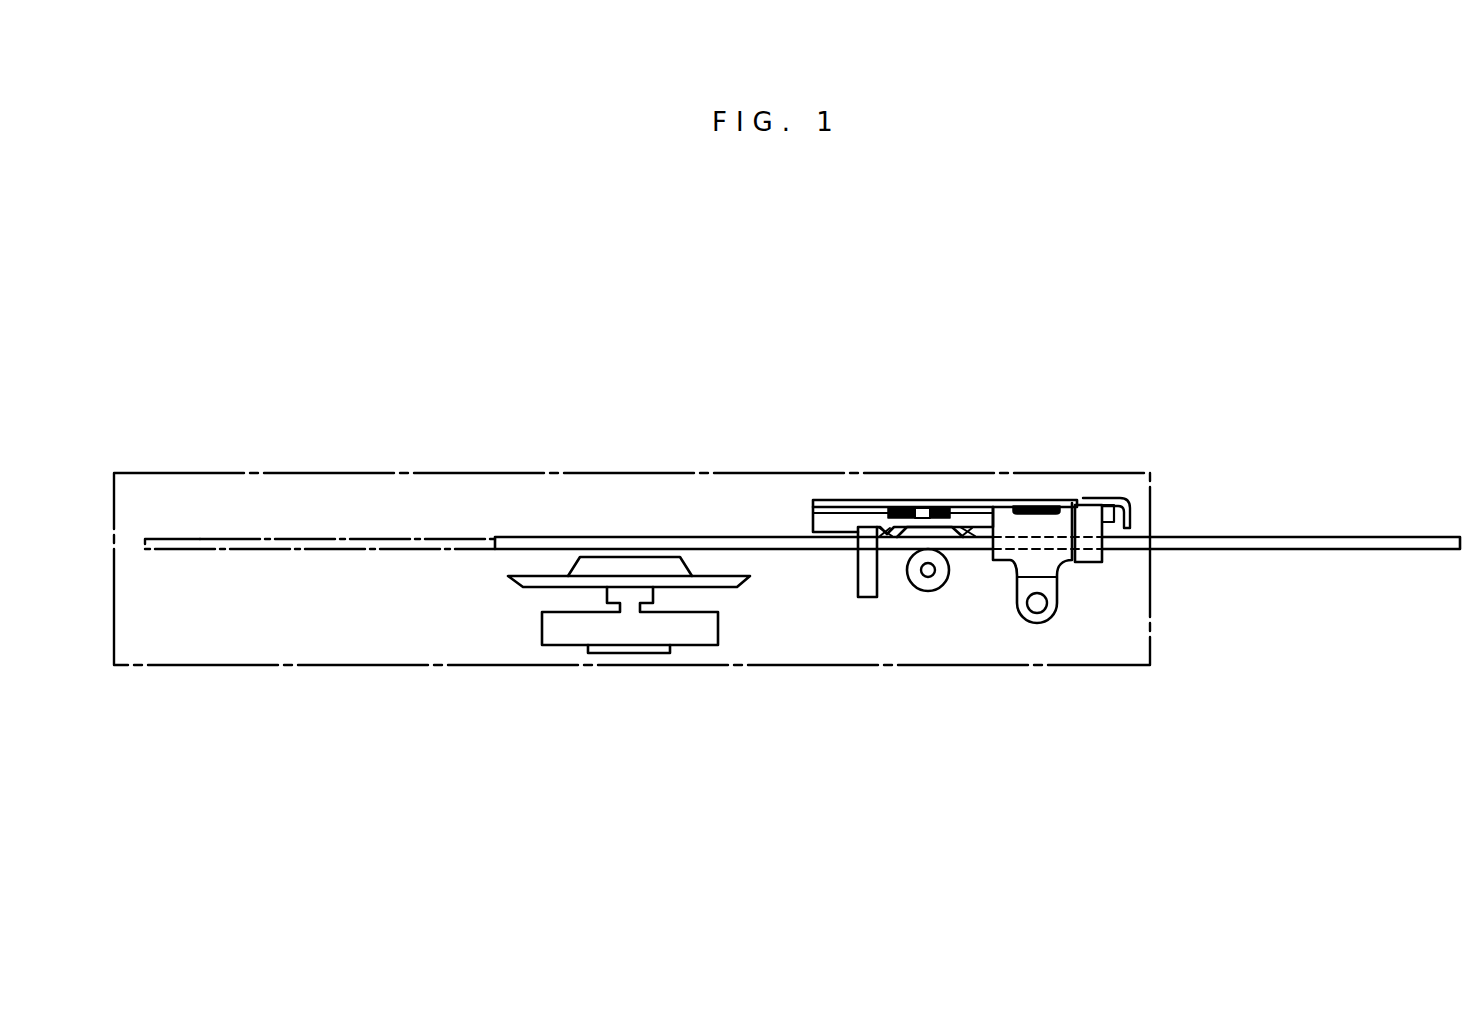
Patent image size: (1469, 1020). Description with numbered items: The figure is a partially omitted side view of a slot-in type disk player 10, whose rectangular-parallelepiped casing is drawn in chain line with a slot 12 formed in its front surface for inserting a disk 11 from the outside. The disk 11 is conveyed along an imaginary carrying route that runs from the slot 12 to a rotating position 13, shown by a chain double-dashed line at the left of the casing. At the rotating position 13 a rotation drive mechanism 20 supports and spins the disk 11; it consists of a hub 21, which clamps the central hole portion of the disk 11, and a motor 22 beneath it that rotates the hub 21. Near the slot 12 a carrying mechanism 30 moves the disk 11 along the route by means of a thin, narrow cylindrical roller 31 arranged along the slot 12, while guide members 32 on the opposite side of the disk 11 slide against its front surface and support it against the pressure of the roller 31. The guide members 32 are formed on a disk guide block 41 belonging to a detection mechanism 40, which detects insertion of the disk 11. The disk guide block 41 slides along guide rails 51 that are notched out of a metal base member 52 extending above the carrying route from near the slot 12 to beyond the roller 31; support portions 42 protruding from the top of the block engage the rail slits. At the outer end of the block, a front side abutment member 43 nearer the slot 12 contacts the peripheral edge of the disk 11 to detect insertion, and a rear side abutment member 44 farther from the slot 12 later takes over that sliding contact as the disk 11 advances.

The disk player 10 is at (362, 474).
The disk 11 is at (1352, 536).
The slot 12 is at (1160, 537).
The rotating position 13 is at (200, 537).
The rotation drive mechanism 20 is at (595, 672).
The hub 21 is at (515, 588).
The motor 22 is at (600, 676).
The carrying mechanism 30 is at (971, 592).
The roller 31 is at (935, 592).
The guide members 32 is at (882, 540).
The detection mechanism 40 is at (1027, 493).
The disk guide block 41 is at (903, 476).
The support portions 42 is at (920, 510).
The front side abutment member 43 is at (1105, 562).
The rear side abutment member 44 is at (858, 590).
The guide rails 51 is at (900, 508).
The base member 52 is at (965, 502).